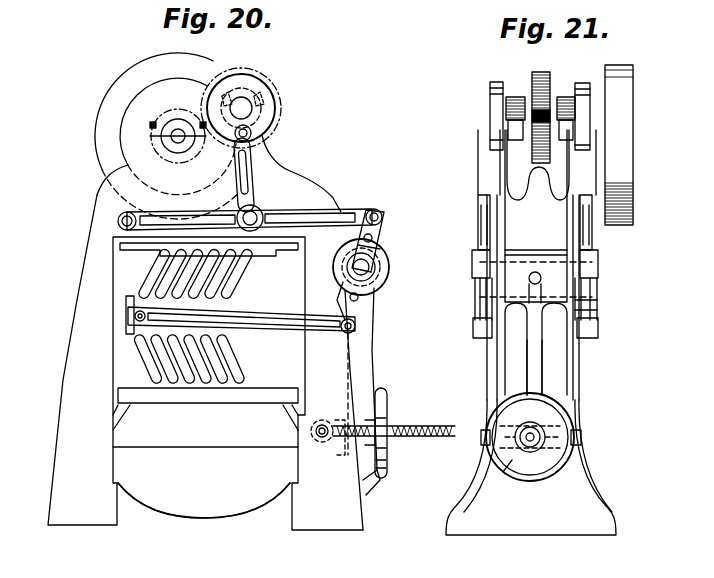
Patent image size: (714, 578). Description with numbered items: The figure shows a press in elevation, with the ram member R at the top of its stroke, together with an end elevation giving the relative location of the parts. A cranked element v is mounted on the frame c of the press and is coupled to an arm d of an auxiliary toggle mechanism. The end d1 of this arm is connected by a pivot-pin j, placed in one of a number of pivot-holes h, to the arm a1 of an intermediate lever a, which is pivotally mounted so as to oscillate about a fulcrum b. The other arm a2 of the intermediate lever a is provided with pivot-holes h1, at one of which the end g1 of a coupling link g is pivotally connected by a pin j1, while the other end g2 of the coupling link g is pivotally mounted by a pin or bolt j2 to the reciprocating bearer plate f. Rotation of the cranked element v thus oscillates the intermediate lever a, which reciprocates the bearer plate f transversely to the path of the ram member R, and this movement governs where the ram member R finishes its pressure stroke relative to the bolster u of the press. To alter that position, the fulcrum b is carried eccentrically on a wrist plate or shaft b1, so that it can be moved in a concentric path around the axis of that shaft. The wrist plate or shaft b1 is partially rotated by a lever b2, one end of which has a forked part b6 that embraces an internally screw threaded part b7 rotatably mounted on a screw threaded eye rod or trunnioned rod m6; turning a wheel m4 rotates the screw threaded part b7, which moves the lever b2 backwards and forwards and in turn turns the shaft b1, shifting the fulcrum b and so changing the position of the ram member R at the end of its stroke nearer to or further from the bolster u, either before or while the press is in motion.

In FIG. 20, the cranked element v is at (250, 126).
In FIG. 21, the cranked element v is at (478, 145).
In FIG. 20, the frame c is at (275, 164).
In FIG. 21, the frame c is at (530, 217).
In FIG. 20, the arm d is at (298, 211).
In FIG. 20, the end of the arm d1 is at (376, 214).
In FIG. 20, the pivot-pin j is at (379, 219).
In FIG. 20, the pivot-holes h is at (372, 238).
In FIG. 20, the arm a1 is at (383, 242).
In FIG. 21, the arm a1 is at (483, 242).
In FIG. 20, the fulcrum b is at (363, 267).
In FIG. 21, the fulcrum b is at (610, 267).
In FIG. 20, the shaft b1 is at (380, 278).
In FIG. 20, the intermediate lever a is at (368, 283).
In FIG. 21, the intermediate lever a is at (478, 286).
In FIG. 20, the pivot-holes h1 is at (358, 297).
In FIG. 20, the arm a2 is at (355, 308).
In FIG. 21, the arm a2 is at (594, 305).
In FIG. 20, the pin j1 is at (355, 327).
In FIG. 20, the end of the coupling link g1 is at (353, 345).
In FIG. 21, the end of the coupling link g1 is at (480, 323).
In FIG. 20, the end of the coupling link g2 is at (130, 305).
In FIG. 20, the pin j2 is at (140, 321).
In FIG. 20, the reciprocating bearer plate f is at (125, 300).
In FIG. 20, the coupling link g is at (185, 305).
In FIG. 20, the ram member R is at (147, 393).
In FIG. 20, the bolster u is at (183, 468).
In FIG. 20, the internally screw threaded part b7 is at (387, 425).
In FIG. 21, the internally screw threaded part b7 is at (535, 437).
In FIG. 20, the screw threaded eye rod m6 is at (418, 433).
In FIG. 21, the screw threaded eye rod m6 is at (533, 442).
In FIG. 20, the wheel m4 is at (387, 470).
In FIG. 21, the wheel m4 is at (510, 468).
In FIG. 20, the forked part b6 is at (368, 485).
In FIG. 21, the lever b2 is at (544, 383).